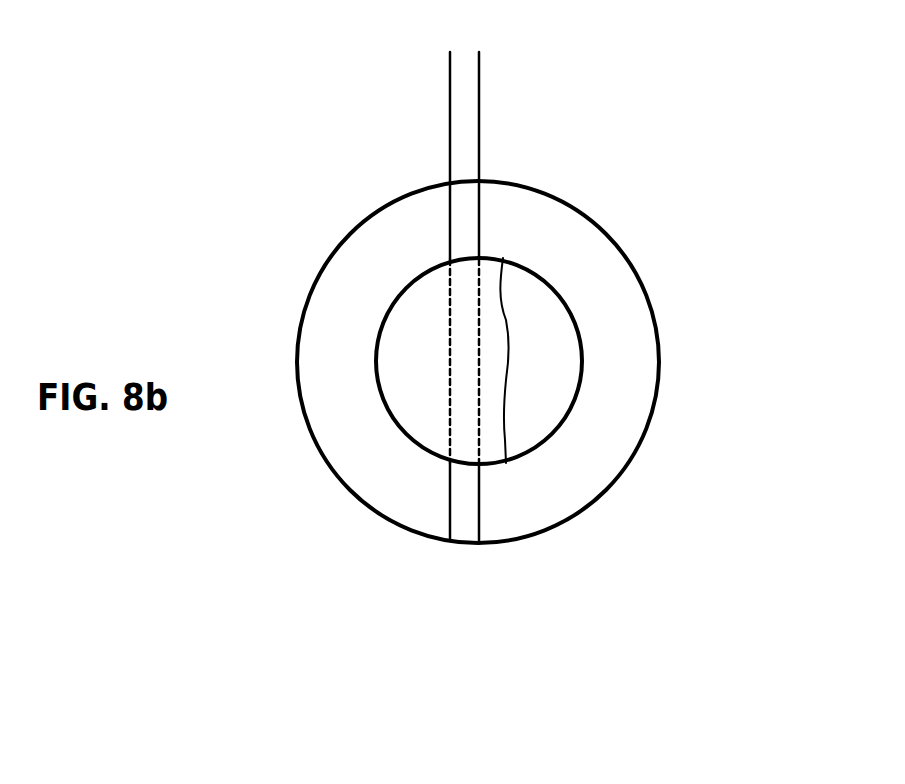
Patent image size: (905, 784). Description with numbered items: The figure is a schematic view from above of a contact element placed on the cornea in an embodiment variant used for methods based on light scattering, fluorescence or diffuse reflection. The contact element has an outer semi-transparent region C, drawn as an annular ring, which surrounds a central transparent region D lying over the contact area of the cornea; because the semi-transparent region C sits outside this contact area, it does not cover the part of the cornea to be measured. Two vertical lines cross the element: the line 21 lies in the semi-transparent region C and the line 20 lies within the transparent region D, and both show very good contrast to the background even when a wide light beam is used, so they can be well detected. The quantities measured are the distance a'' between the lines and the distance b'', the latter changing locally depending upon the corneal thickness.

The semi-transparent region C is at (580, 247).
The transparent region D is at (410, 388).
The line 20 is at (503, 422).
The line 21 is at (479, 507).
The distance a'' is at (483, 47).
The distance b'' is at (581, 350).